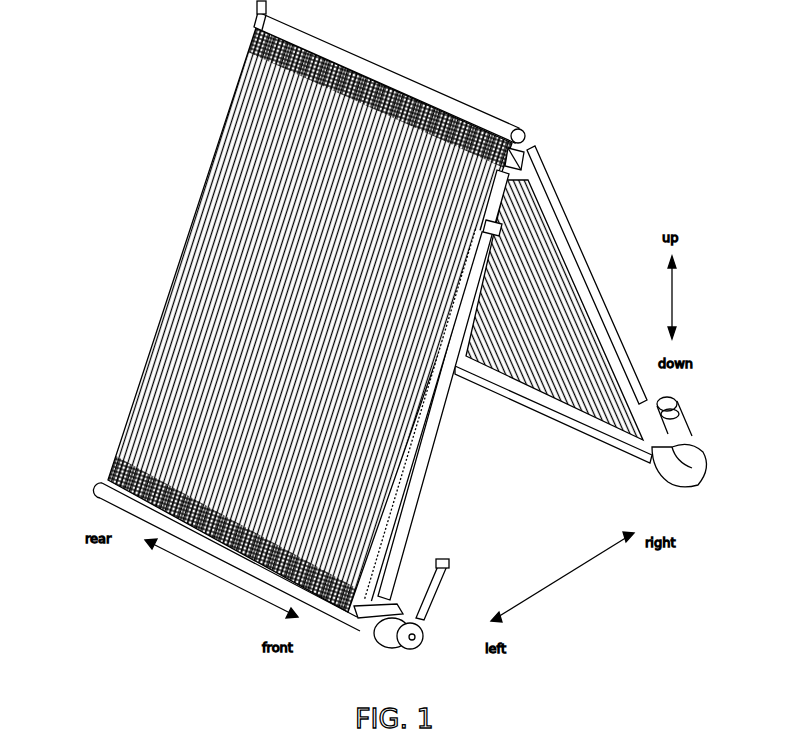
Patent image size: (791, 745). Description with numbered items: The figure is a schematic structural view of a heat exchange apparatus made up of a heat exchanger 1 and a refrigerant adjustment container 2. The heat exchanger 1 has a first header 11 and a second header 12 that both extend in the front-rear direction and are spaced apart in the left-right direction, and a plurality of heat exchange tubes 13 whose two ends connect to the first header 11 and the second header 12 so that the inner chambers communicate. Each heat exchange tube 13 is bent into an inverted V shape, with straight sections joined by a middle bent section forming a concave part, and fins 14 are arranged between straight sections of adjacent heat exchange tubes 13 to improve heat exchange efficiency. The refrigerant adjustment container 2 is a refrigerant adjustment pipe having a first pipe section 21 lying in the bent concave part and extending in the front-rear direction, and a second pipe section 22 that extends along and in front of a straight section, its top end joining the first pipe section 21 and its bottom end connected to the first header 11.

The heat exchanger 1 is at (584, 263).
The refrigerant adjustment container 2 is at (440, 436).
The first header 11 is at (330, 608).
The second header 12 is at (621, 450).
The heat exchange tube 13 is at (218, 140).
The fin 14 is at (240, 53).
The first pipe section 21 is at (540, 160).
The second pipe section 22 is at (407, 509).